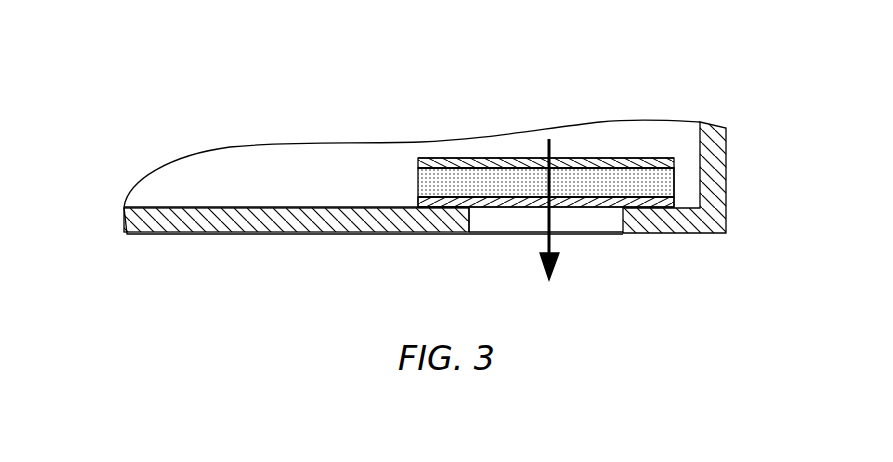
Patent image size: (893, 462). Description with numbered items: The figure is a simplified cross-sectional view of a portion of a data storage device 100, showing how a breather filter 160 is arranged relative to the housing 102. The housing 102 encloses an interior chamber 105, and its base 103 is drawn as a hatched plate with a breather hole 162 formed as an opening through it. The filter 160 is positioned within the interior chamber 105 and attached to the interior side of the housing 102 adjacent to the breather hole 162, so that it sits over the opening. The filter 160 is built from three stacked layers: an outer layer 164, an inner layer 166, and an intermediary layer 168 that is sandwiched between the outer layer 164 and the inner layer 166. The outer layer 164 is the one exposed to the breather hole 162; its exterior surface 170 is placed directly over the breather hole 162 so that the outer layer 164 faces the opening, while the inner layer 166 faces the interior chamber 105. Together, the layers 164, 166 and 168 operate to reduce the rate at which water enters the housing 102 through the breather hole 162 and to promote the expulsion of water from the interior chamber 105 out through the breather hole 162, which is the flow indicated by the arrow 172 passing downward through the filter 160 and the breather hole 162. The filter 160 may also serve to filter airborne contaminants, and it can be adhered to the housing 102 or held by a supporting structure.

The data storage device 100 is at (138, 60).
The housing 102 is at (723, 143).
The base 103 is at (208, 235).
The interior chamber 105 is at (345, 170).
The breather filter 160 is at (438, 160).
The breather hole 162 is at (610, 225).
The outer layer 164 is at (652, 205).
The inner layer 166 is at (663, 160).
The intermediary layer 168 is at (667, 185).
The exterior surface 170 is at (443, 210).
The arrow 172 is at (555, 150).